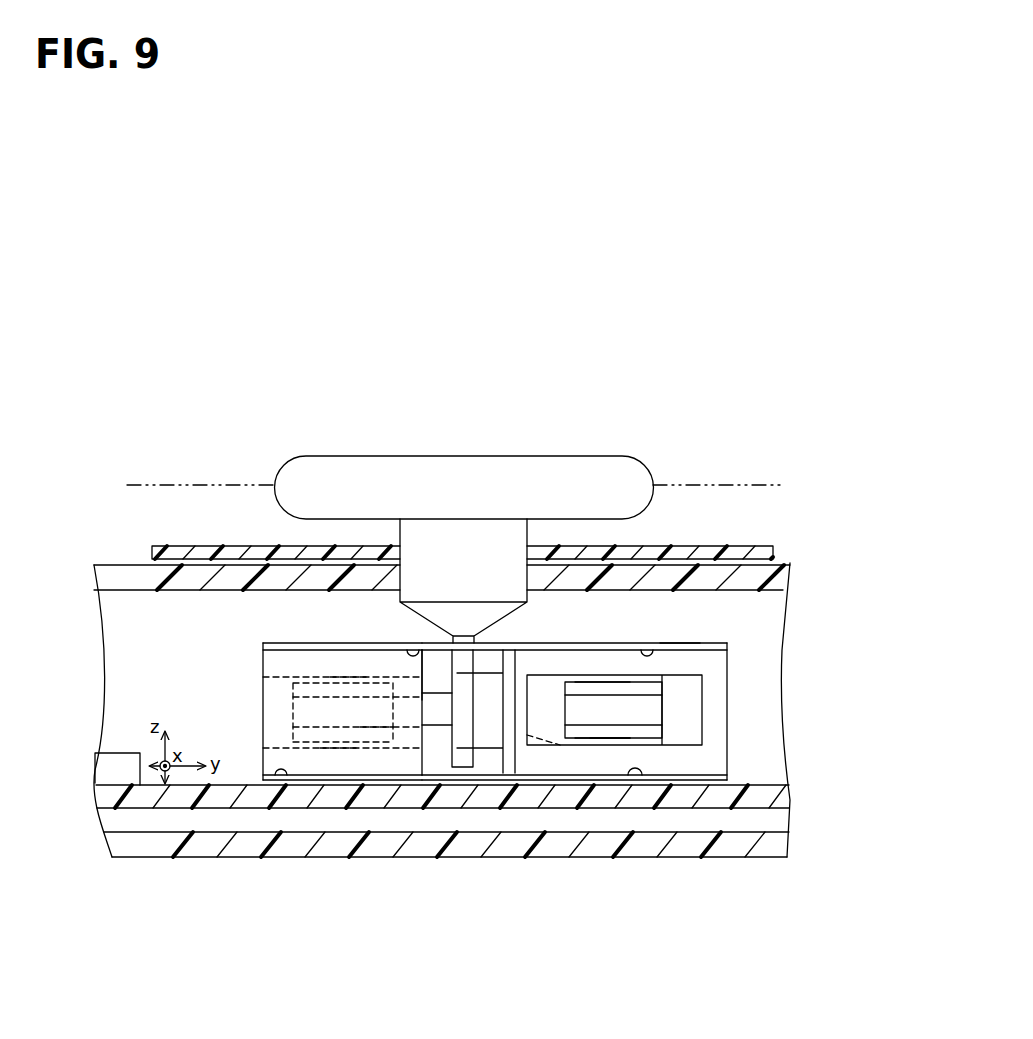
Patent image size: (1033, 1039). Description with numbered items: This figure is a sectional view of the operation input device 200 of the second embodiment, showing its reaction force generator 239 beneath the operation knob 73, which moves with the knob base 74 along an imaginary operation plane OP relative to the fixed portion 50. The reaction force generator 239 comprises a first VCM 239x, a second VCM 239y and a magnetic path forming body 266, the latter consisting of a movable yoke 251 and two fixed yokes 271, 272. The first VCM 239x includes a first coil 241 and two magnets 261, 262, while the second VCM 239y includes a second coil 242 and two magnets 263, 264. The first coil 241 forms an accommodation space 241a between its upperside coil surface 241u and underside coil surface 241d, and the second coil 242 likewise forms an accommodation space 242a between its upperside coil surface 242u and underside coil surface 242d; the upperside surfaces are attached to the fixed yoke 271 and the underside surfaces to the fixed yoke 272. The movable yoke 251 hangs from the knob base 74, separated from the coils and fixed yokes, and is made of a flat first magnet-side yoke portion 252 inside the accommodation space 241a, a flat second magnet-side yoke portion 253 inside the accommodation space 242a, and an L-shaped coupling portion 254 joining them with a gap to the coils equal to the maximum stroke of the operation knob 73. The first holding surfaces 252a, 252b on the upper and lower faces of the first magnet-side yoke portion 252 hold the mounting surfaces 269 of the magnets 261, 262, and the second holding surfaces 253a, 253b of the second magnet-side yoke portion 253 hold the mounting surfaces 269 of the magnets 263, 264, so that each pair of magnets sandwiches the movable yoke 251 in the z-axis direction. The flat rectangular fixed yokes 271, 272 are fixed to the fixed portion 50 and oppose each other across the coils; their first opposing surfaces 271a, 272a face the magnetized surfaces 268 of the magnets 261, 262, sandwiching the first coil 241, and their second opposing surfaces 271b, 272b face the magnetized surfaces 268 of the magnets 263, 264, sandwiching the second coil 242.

The operation input device 200 is at (690, 445).
The operation plane OP is at (167, 485).
The operation knob 73 is at (650, 470).
The knob base 74 is at (508, 563).
The reaction force generator 239 is at (725, 617).
The first VCM 239x is at (705, 548).
The second VCM 239y is at (255, 745).
The fixed portion 50 is at (132, 858).
The first coil 241 is at (727, 662).
The accommodation space 241a is at (547, 690).
The upperside coil surface 241u is at (660, 641).
The underside coil surface 241d is at (712, 782).
The second coil 242 is at (262, 660).
The accommodation space 242a is at (382, 677).
The upperside coil surface 242u is at (283, 640).
The underside coil surface 242d is at (263, 780).
The movable yoke 251 is at (433, 717).
The first magnet-side yoke portion 252 is at (655, 708).
The first holding surface 252a is at (662, 683).
The first holding surface 252b is at (662, 736).
The second magnet-side yoke portion 253 is at (293, 717).
The second holding surface 253a is at (293, 690).
The second holding surface 253b is at (293, 722).
The coupling portion 254 is at (492, 748).
The magnet 261 is at (602, 692).
The magnet 262 is at (603, 745).
The magnet 263 is at (350, 677).
The magnet 264 is at (338, 748).
The magnetic path forming body 266 is at (443, 692).
The magnetized surface 268 is at (318, 677).
The mounting surface 269 is at (383, 748).
The fixed yoke 271 is at (443, 500).
The first opposing surface 271a is at (670, 628).
The second opposing surface 271b is at (425, 650).
The fixed yoke 272 is at (555, 897).
The first opposing surface 272a is at (608, 733).
The second opposing surface 272b is at (285, 782).